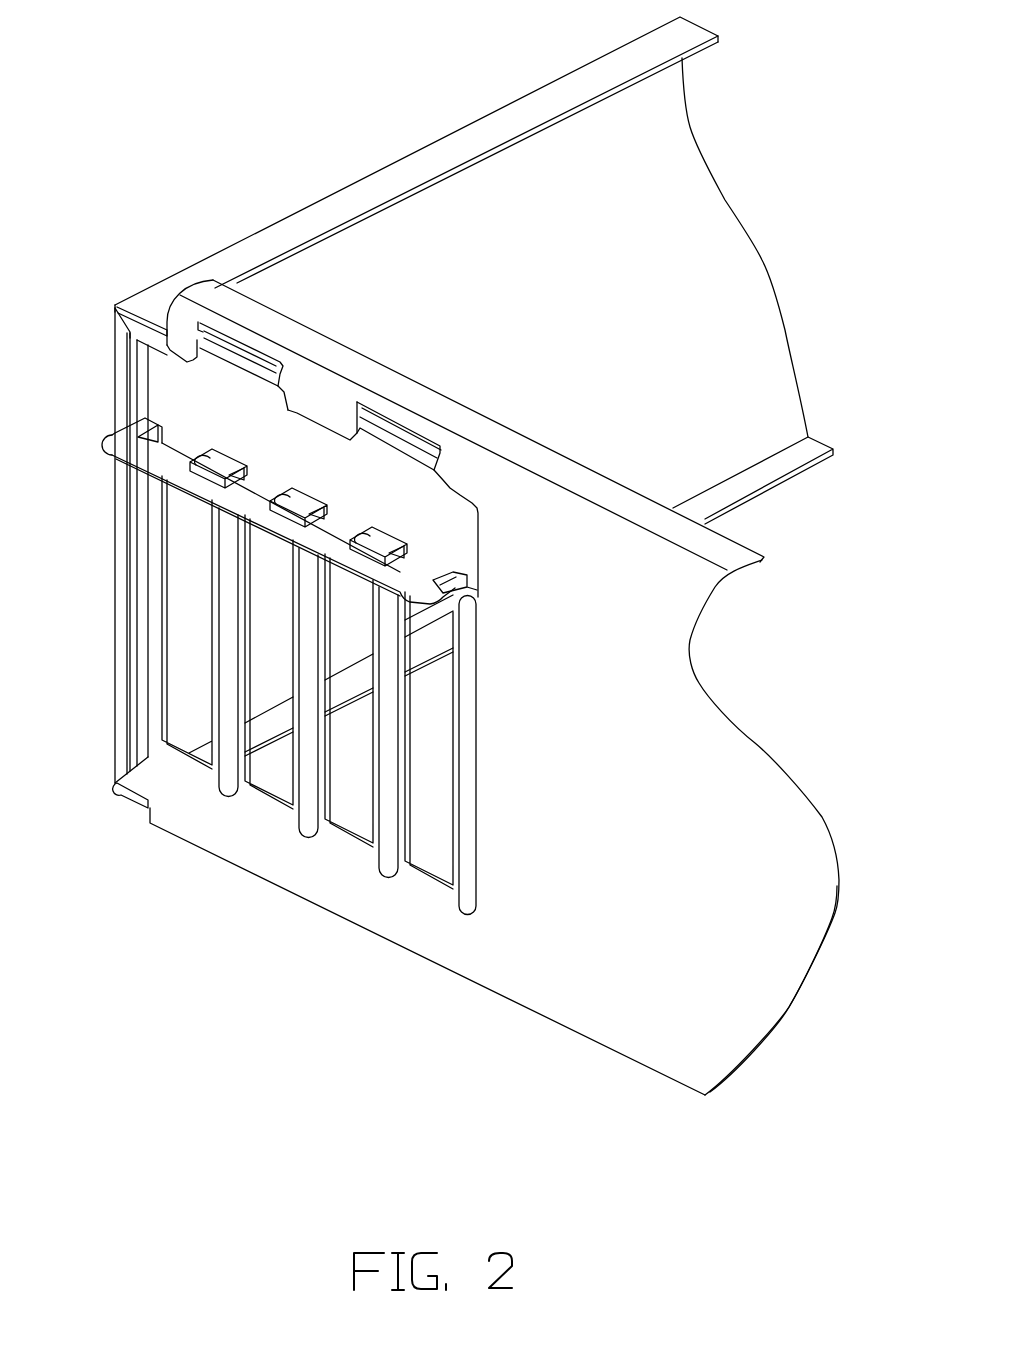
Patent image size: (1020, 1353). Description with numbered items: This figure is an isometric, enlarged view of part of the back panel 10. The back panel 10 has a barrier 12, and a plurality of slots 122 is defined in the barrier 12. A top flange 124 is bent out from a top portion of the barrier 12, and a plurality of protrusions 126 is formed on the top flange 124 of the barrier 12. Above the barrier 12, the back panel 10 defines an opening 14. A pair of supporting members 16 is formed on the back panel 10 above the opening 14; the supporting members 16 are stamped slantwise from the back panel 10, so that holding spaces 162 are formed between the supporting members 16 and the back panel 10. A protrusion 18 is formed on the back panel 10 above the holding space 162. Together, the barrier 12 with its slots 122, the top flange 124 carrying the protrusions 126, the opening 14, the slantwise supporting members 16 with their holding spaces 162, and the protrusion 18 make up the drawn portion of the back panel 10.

The back panel 10 is at (550, 928).
The barrier 12 is at (227, 762).
The opening 14 is at (165, 393).
The supporting members 16 is at (207, 312).
The protrusion 18 is at (243, 340).
The holding spaces 162 is at (275, 345).
The slots 122 is at (187, 640).
The top flange 124 is at (110, 437).
The protrusions 126 is at (162, 468).